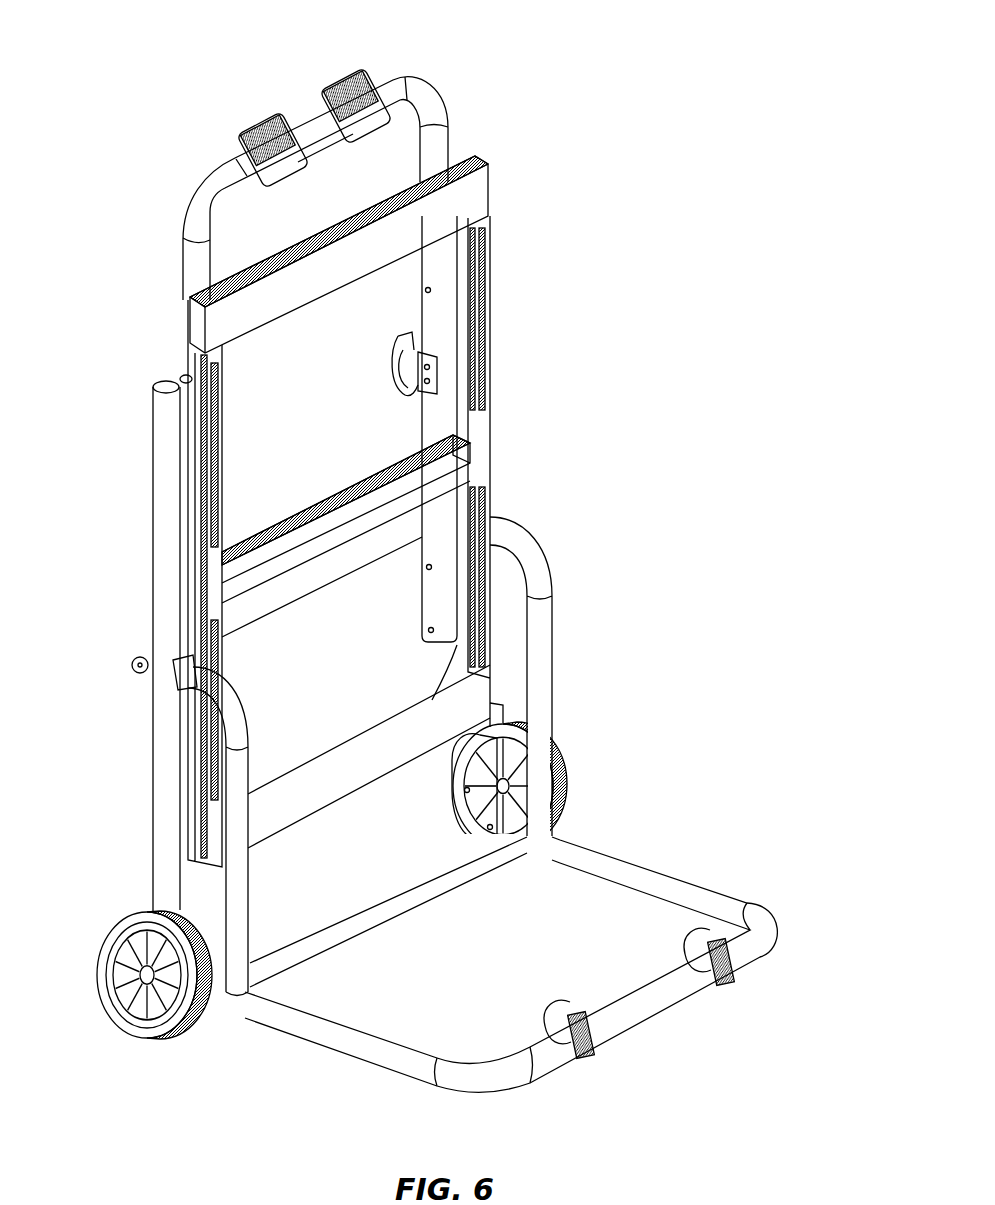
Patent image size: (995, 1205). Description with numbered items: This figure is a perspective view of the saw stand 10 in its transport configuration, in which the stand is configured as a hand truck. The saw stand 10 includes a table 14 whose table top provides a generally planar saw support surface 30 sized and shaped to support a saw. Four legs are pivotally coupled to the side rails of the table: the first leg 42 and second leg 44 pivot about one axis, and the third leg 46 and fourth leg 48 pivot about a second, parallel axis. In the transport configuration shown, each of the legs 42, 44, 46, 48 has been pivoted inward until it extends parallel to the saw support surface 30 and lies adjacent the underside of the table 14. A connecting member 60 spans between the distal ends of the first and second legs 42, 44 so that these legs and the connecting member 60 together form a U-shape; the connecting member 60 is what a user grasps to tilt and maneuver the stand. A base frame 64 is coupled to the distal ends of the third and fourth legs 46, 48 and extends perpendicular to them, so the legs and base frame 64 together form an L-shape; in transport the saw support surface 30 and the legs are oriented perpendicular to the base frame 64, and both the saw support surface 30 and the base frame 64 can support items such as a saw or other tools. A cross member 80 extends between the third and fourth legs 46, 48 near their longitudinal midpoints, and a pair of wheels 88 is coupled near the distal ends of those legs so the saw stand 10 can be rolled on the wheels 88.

The saw stand 10 is at (613, 109).
The table 14 is at (520, 283).
The saw support surface 30 is at (466, 201).
The first leg 42 is at (432, 415).
The second leg 44 is at (187, 275).
The third leg 46 is at (453, 747).
The fourth leg 48 is at (162, 481).
The connecting member 60 is at (312, 133).
The base frame 64 is at (643, 839).
The cross member 80 is at (320, 577).
The wheels 88 is at (143, 1037).